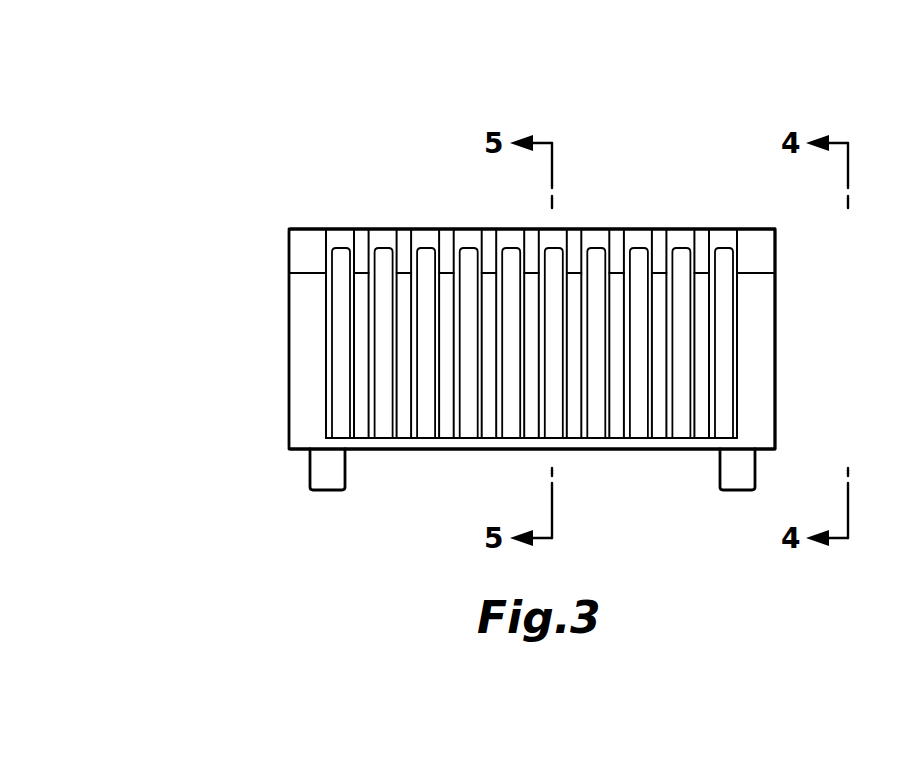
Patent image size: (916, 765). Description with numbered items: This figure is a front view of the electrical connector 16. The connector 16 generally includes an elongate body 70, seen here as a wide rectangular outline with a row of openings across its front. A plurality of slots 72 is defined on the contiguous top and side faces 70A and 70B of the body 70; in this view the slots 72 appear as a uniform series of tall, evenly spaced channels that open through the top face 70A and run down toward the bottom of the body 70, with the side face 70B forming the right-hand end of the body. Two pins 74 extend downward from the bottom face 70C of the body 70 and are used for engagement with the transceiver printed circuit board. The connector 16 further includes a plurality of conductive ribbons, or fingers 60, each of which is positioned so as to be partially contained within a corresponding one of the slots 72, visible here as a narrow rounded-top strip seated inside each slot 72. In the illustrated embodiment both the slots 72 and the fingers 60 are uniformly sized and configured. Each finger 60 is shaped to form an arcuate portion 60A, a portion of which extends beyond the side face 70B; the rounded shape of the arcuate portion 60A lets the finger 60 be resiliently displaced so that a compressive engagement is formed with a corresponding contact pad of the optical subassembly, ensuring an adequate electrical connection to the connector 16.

The connector 16 is at (203, 232).
The fingers 60 is at (467, 252).
The arcuate portion 60A is at (340, 299).
The elongate body 70 is at (288, 398).
The top face 70A is at (360, 228).
The side face 70B is at (760, 363).
The bottom face 70C is at (430, 450).
The slots 72 is at (642, 238).
The pins 74 is at (309, 470).